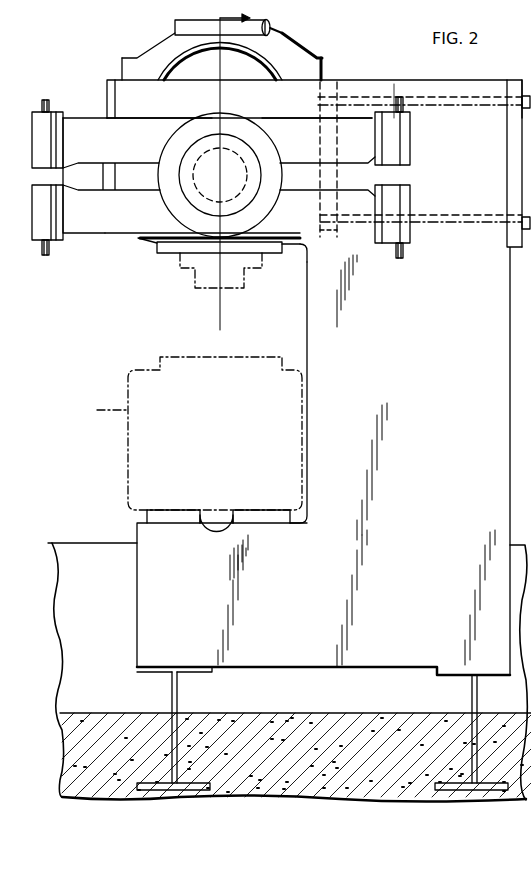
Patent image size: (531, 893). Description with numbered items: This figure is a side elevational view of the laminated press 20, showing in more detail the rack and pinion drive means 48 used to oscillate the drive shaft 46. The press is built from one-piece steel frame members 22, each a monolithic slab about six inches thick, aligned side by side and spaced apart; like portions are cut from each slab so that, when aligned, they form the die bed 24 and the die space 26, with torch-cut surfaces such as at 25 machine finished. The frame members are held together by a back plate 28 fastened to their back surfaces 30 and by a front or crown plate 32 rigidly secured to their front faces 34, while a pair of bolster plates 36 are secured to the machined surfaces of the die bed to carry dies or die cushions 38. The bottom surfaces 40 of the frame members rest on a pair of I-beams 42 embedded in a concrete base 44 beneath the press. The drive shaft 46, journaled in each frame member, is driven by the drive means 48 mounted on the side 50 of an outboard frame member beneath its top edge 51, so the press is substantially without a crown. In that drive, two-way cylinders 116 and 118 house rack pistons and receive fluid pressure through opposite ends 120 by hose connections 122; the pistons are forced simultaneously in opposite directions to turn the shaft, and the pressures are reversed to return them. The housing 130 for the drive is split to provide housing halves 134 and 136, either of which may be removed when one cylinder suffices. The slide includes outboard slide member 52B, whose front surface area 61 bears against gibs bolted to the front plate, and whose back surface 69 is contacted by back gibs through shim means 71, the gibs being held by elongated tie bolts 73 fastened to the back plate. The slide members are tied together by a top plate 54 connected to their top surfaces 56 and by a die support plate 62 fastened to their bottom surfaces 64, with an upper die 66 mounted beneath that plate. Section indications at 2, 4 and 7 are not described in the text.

The section line 2 is at (5, 690).
The section line 4 is at (7, 566).
The section line 7- 7 is at (220, 322).
The laminated press 20 is at (316, 461).
The frame member 22 is at (296, 339).
The die bed 24 is at (230, 505).
The machine finished surface 25 is at (180, 517).
The die space 26 is at (215, 433).
The back plate 28 is at (516, 88).
The back surface 30 is at (510, 190).
The front or crown plate 32 is at (107, 90).
The front face 34 is at (116, 112).
The bolster plate 36 is at (181, 510).
The die cushion 38 is at (98, 410).
The bottom surface 40 is at (296, 676).
The I-beam 42 is at (172, 697).
The concrete base 44 is at (60, 634).
The drive shaft 46 is at (242, 160).
The drive means 48 is at (100, 240).
The side 50 is at (320, 92).
The top edge 51 is at (398, 82).
The outboard slide member 52B is at (160, 38).
The top plate 54 is at (175, 27).
The top surface 56 is at (272, 26).
The front surface area 61 is at (122, 63).
The die support plate 62 is at (178, 247).
The bottom surface 64 is at (297, 252).
The upper die 66 is at (194, 283).
The back surface 69 is at (322, 66).
The shim means 71 is at (318, 97).
The tie bolt 73 is at (445, 104).
The cylinder 116 is at (106, 175).
The cylinder 118 is at (108, 127).
The opposite ends 120 is at (22, 167).
The hose connection 122 is at (46, 100).
The housing 130 is at (212, 96).
The housing half 134 is at (300, 248).
The housing half 136 is at (268, 120).